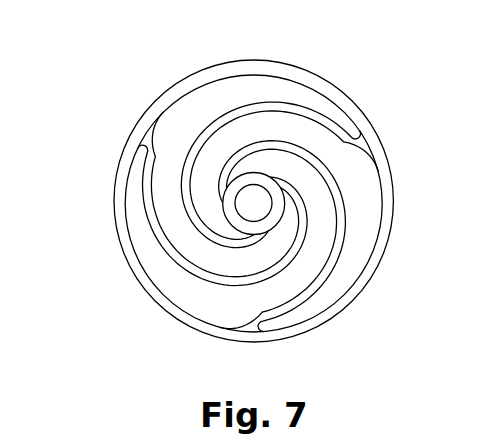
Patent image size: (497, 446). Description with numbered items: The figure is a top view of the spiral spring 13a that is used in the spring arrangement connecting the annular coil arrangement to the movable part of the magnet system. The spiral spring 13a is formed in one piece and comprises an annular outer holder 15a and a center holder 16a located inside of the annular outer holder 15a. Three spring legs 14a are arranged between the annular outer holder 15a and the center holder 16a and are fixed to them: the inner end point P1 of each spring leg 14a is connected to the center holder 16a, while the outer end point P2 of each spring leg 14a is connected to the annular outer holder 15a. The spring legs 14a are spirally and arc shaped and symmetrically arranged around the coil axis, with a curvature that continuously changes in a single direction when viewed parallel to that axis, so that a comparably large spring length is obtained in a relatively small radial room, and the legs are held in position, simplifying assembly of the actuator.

The spiral spring 13a is at (217, 201).
The spring leg 14a is at (241, 218).
The annular outer holder 15a is at (253, 201).
The center holder 16a is at (254, 204).
The inner end point P1 is at (259, 242).
The outer end point P2 is at (360, 145).